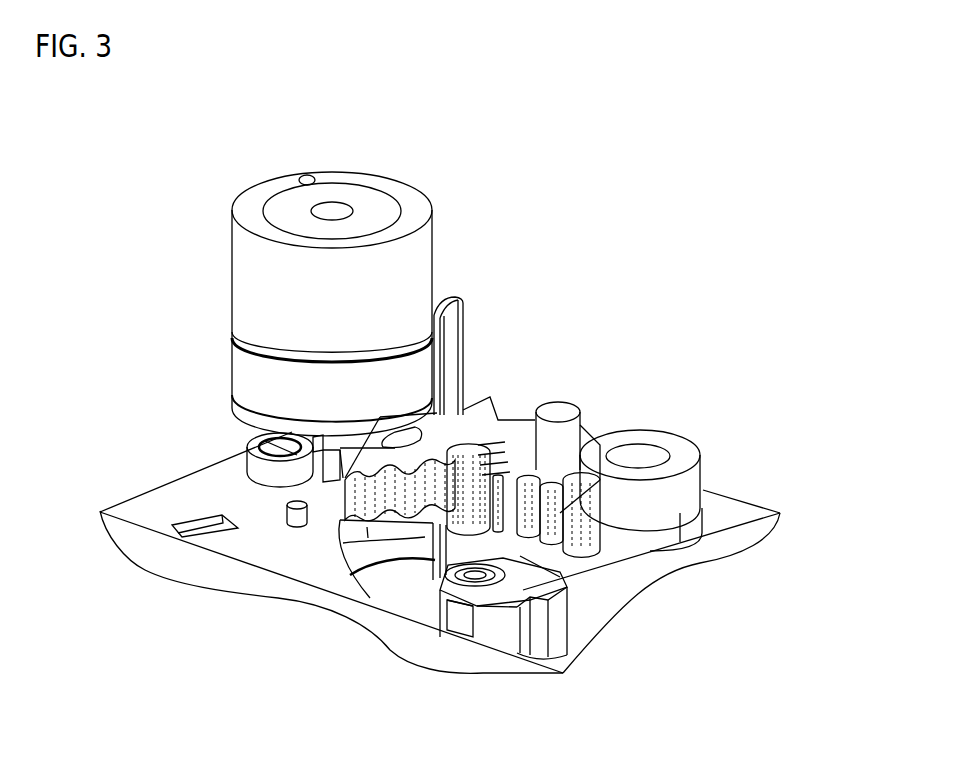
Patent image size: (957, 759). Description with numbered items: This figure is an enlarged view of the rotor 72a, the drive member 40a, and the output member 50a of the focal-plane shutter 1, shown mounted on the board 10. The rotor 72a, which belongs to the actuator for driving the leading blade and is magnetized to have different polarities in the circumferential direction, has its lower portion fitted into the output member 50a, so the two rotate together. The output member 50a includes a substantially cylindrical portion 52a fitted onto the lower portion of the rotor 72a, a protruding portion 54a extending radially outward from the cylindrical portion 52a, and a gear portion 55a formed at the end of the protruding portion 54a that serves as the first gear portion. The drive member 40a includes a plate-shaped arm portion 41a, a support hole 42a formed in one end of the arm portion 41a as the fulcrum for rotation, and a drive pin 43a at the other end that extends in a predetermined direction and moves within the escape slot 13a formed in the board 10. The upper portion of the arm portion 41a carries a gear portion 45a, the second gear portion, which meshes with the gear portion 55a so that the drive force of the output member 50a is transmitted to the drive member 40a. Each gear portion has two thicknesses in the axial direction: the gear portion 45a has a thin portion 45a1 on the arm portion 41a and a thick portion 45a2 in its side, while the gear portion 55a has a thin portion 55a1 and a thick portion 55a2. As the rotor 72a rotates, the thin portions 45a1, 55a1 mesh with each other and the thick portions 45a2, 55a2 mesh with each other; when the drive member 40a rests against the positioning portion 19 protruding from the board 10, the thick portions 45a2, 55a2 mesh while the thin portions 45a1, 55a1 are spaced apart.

The focal-plane shutter 1 is at (538, 190).
The board 10 is at (147, 487).
The escape slot 13a is at (400, 585).
The support block 19 is at (527, 625).
The drive member 40a is at (691, 452).
The arm portion 41a is at (608, 440).
The support hole 42a is at (653, 437).
The drive pin 43a is at (463, 630).
The gear portion 45a is at (612, 604).
The thin portion 45a1 is at (560, 513).
The thick portion 45a2 is at (560, 577).
The output member 50a is at (356, 304).
The cylindrical portion 52a is at (410, 372).
The protruding portion 54a is at (275, 447).
The gear portion 55a is at (501, 401).
The thin portion 55a1 is at (474, 490).
The thick portion 55a2 is at (490, 478).
The rotor 72a is at (400, 272).